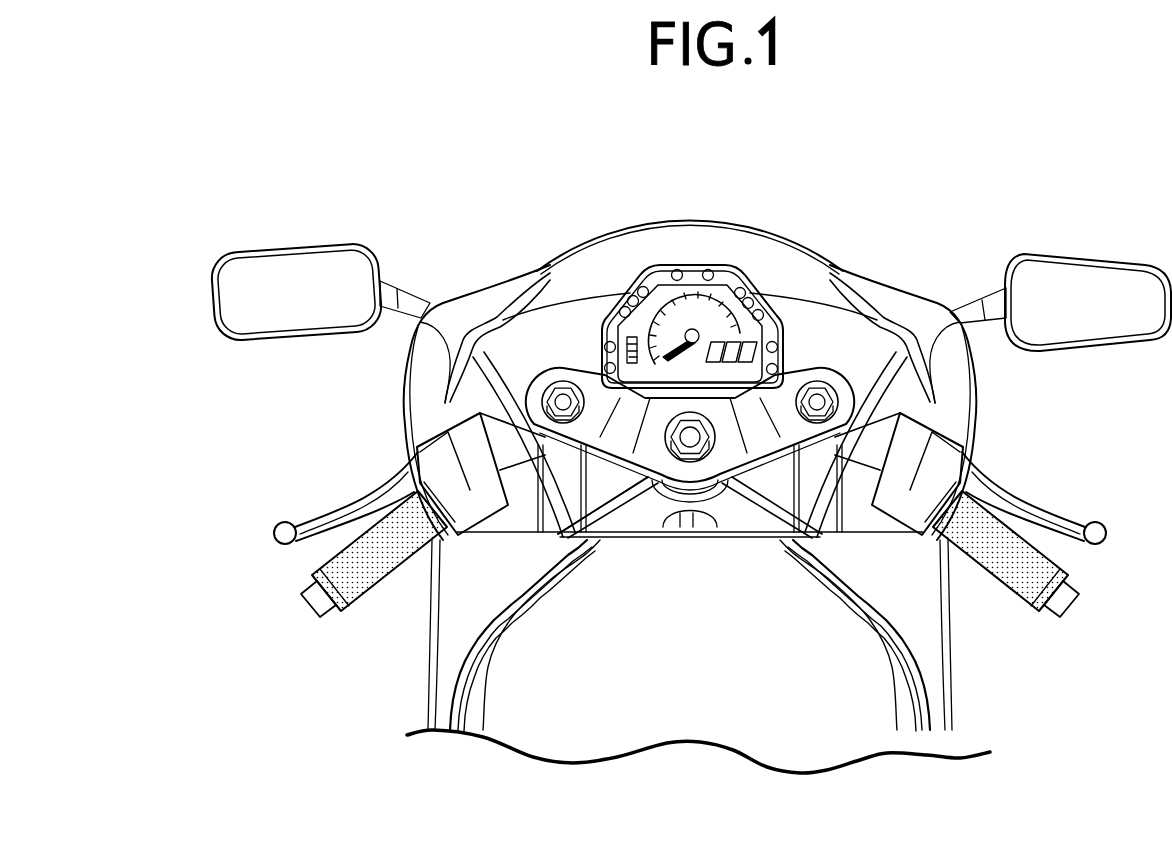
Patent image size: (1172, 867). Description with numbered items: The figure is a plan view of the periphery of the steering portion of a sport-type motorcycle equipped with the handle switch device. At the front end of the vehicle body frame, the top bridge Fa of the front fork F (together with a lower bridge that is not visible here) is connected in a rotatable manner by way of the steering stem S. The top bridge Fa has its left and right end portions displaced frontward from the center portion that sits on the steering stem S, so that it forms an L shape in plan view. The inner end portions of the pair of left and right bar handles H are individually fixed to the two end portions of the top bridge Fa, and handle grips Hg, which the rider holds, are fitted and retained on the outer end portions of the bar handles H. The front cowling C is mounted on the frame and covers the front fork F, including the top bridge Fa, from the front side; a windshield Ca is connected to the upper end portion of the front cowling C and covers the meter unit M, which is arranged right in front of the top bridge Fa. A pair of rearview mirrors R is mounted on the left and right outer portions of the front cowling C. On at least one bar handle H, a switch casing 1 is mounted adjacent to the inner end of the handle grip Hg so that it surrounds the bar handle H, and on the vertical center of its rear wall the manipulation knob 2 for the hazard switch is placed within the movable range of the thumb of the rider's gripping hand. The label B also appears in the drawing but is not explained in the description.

The rearview mirror R is at (273, 273).
The meter unit M is at (657, 282).
The windshield Ca is at (785, 233).
The top bridge Fa is at (607, 410).
The front cowling C is at (980, 407).
The bar handle H is at (303, 600).
The handle grip Hg is at (368, 577).
The bracket B is at (652, 497).
The steering stem S is at (692, 440).
The front fork F is at (790, 497).
The switch casing 1 is at (912, 525).
The manipulation knob for hazard 2 is at (922, 587).